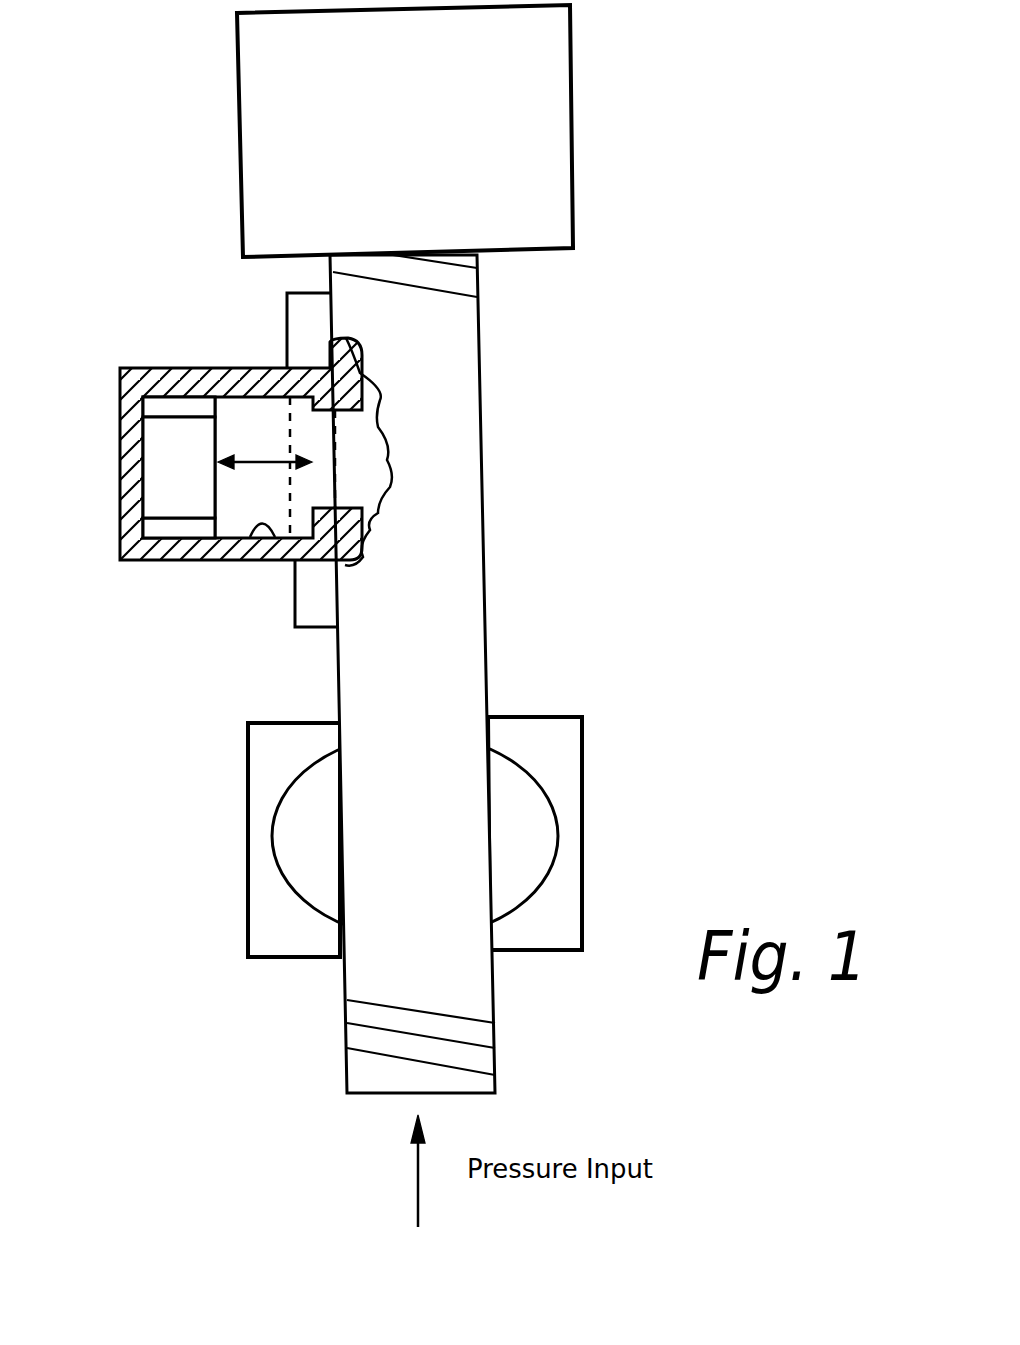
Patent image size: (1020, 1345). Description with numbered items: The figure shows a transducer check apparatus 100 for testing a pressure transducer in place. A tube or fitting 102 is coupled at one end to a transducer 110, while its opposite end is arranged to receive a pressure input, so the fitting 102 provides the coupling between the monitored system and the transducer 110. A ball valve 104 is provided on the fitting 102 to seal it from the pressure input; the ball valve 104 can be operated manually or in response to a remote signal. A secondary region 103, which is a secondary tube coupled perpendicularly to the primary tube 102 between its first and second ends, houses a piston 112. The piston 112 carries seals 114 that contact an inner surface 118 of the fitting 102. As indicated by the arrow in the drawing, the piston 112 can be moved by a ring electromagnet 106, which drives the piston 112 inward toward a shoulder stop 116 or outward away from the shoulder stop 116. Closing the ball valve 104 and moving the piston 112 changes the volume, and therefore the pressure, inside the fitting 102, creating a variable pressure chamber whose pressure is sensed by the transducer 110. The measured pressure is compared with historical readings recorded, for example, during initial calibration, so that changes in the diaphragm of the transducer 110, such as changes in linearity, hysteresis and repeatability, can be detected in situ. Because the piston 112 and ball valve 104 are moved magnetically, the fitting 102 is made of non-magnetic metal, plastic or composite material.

The transducer check apparatus 100 is at (392, 549).
The tube or fitting 102 is at (463, 565).
The secondary region 103 is at (153, 367).
The ball valve 104 is at (572, 752).
The ring electromagnet 106 is at (297, 328).
The transducer 110 is at (557, 167).
The piston 112 is at (153, 468).
The seals 114 is at (150, 407).
The shoulder stop 116 is at (350, 497).
The inner surface 118 is at (258, 522).